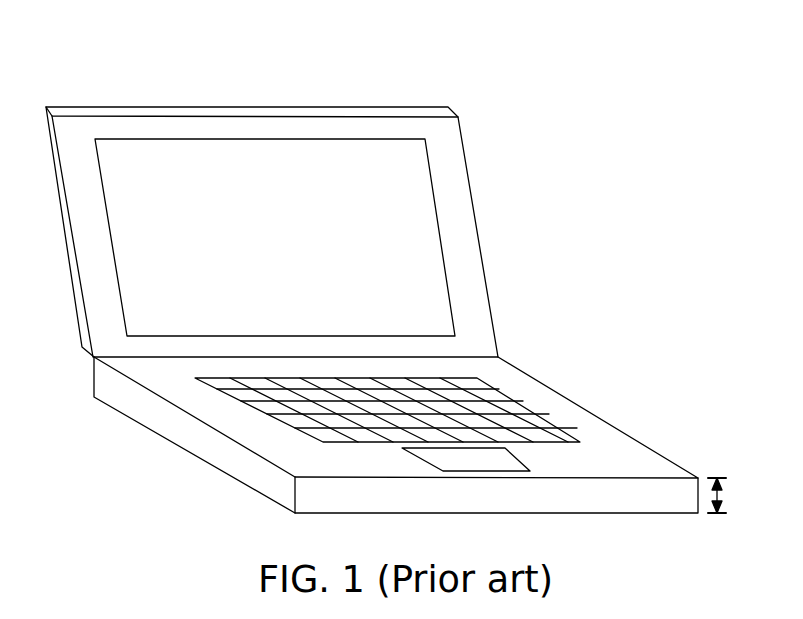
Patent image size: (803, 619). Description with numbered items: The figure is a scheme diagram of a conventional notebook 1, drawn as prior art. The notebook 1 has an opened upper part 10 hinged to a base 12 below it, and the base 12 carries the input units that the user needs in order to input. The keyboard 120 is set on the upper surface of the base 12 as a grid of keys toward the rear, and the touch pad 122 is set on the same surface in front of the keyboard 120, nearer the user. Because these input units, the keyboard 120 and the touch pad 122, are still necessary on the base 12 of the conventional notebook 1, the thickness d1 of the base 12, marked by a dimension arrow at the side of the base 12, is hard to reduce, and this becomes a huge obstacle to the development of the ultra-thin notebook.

The notebook 1 is at (385, 68).
The display module (lid) 10 is at (197, 108).
The base 12 is at (207, 448).
The keyboard 120 is at (490, 397).
The touch pad 122 is at (485, 458).
The thickness of the base d1 is at (737, 498).